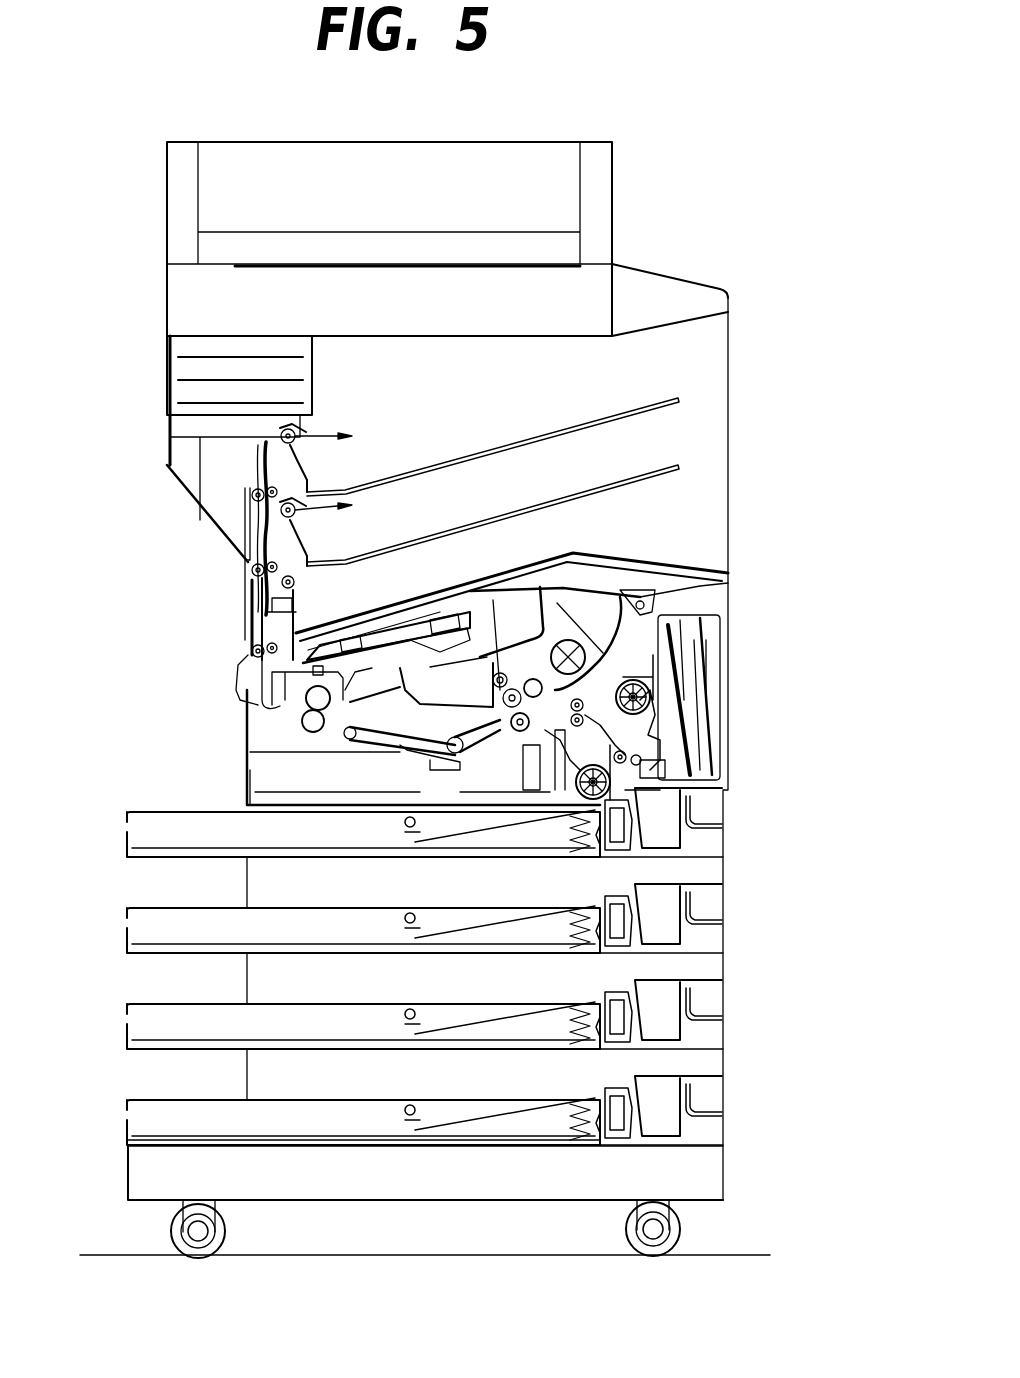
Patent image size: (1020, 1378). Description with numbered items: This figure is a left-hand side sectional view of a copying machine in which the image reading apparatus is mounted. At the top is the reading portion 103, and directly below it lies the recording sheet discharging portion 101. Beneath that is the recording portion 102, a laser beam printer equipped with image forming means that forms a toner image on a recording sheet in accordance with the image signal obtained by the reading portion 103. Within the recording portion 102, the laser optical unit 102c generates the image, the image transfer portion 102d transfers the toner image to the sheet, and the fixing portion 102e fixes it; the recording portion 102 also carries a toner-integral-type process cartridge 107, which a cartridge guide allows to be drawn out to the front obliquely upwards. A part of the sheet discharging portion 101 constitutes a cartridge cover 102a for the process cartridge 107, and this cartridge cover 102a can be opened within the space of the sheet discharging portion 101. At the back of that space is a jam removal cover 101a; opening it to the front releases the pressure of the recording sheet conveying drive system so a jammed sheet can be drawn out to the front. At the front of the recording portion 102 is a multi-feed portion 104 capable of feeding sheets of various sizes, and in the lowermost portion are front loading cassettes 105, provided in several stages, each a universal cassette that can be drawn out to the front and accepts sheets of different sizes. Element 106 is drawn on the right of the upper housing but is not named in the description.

The recording sheet discharging portion 101 is at (700, 360).
The jam removal cover 101a is at (229, 594).
The recording portion 102 is at (752, 712).
The cartridge cover 102a is at (640, 562).
The laser optical unit 102c is at (435, 627).
The image transfer portion 102d is at (548, 605).
The fixing portion 102e is at (300, 722).
The reading portion 103 is at (153, 142).
The multi-feed portion 104 is at (720, 707).
The front loading cassettes 105 is at (752, 1132).
The operation panel 106 is at (681, 296).
The toner-integral-type process cartridge 107 is at (687, 585).